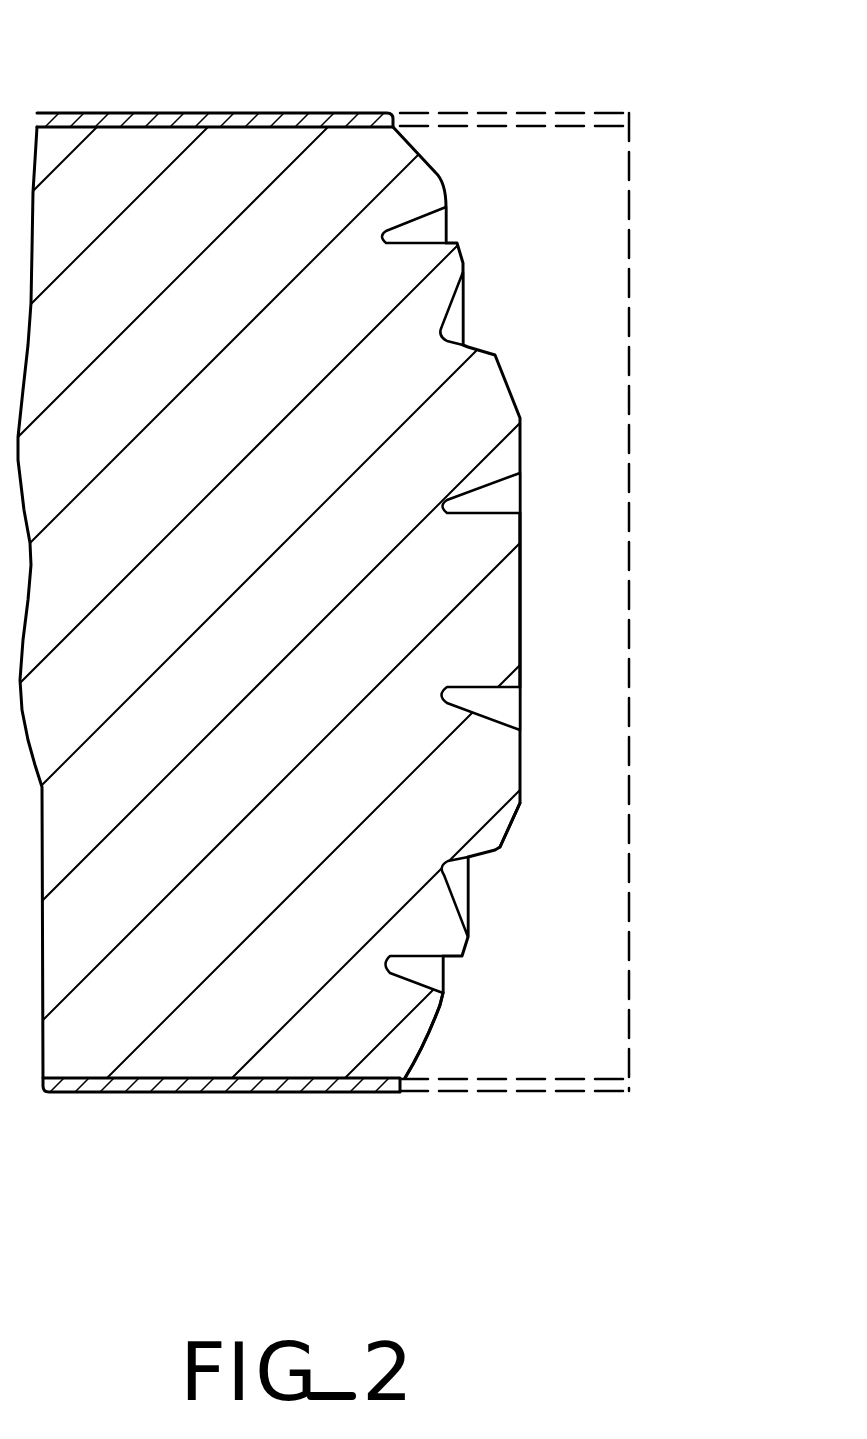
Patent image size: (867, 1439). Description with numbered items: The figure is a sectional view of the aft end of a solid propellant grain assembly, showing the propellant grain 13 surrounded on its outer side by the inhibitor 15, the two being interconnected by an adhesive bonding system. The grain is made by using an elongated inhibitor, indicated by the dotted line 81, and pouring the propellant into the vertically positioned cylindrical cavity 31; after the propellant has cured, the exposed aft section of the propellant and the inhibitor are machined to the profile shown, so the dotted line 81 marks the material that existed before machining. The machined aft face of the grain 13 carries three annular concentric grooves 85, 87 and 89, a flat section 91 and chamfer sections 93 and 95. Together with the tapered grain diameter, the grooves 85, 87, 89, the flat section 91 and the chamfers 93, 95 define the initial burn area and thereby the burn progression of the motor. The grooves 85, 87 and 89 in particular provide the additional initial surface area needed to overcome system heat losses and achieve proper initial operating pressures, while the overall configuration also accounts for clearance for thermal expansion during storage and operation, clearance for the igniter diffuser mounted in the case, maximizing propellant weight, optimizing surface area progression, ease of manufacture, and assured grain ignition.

The propellant grain 13 is at (230, 160).
The inhibitor 15 is at (333, 127).
The elongated inhibitor (dotted line) 81 is at (517, 110).
The cylindrical cavity 31 is at (593, 353).
The annular concentric groove 89 is at (423, 230).
The annular concentric groove 87 is at (453, 327).
The annular concentric groove 85 is at (502, 495).
The flat section 91 is at (520, 590).
The chamfer section 93 is at (513, 827).
The chamfer section 95 is at (418, 1058).